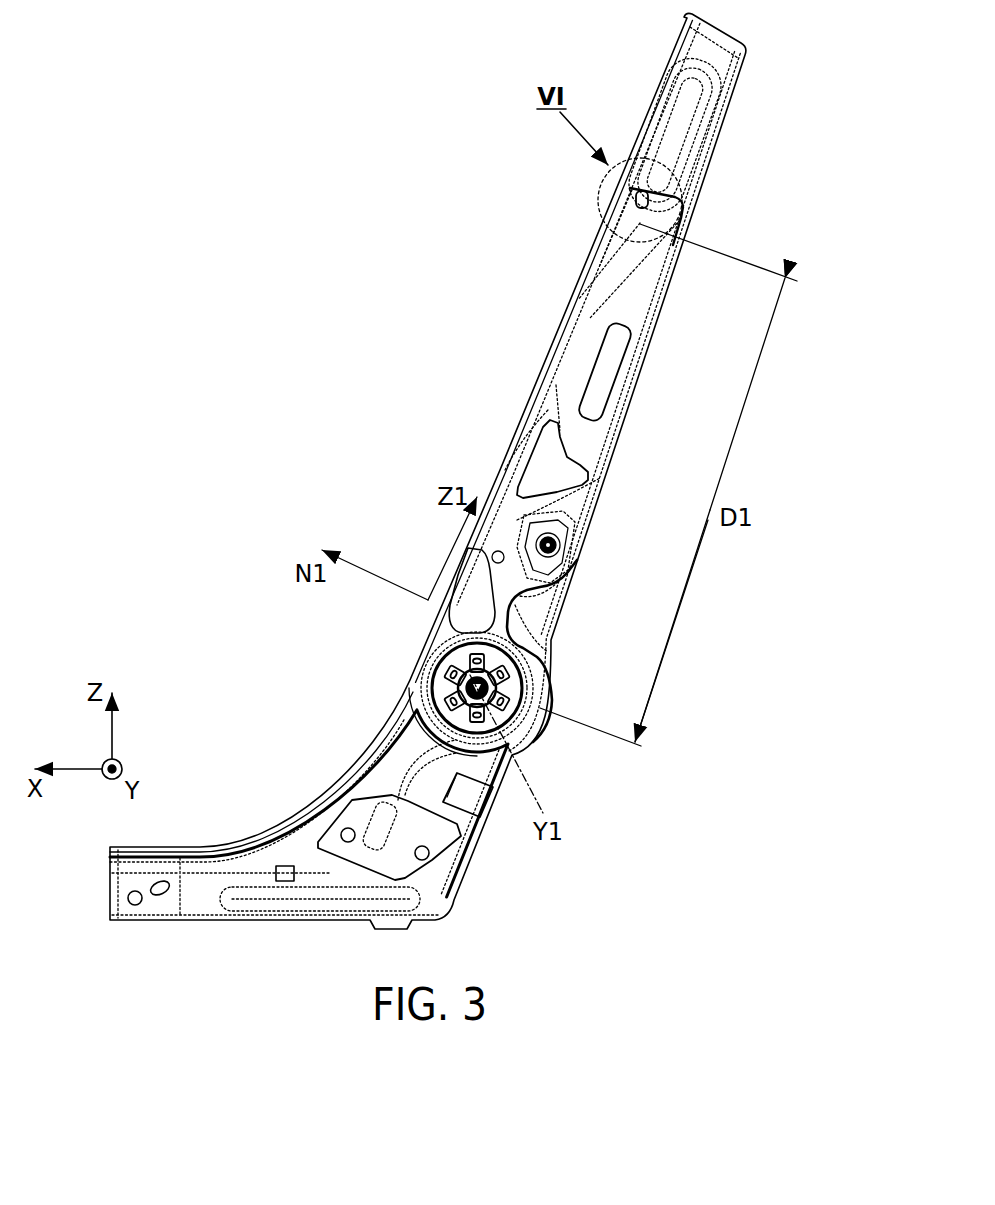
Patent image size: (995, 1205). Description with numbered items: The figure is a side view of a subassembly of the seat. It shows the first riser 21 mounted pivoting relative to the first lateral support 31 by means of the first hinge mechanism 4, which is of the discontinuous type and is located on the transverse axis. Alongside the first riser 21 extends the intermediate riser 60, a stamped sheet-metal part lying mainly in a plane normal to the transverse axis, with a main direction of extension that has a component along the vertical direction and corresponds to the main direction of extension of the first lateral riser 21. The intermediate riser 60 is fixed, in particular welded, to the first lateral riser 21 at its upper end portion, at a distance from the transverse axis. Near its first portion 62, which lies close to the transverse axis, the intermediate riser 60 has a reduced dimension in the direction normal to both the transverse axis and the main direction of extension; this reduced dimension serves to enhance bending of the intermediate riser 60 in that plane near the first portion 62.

The first hinge mechanism 4 is at (433, 670).
The first riser 21 is at (703, 182).
The first lateral support 31 is at (250, 850).
The intermediate riser 60 is at (618, 290).
The first portion 62 is at (507, 593).